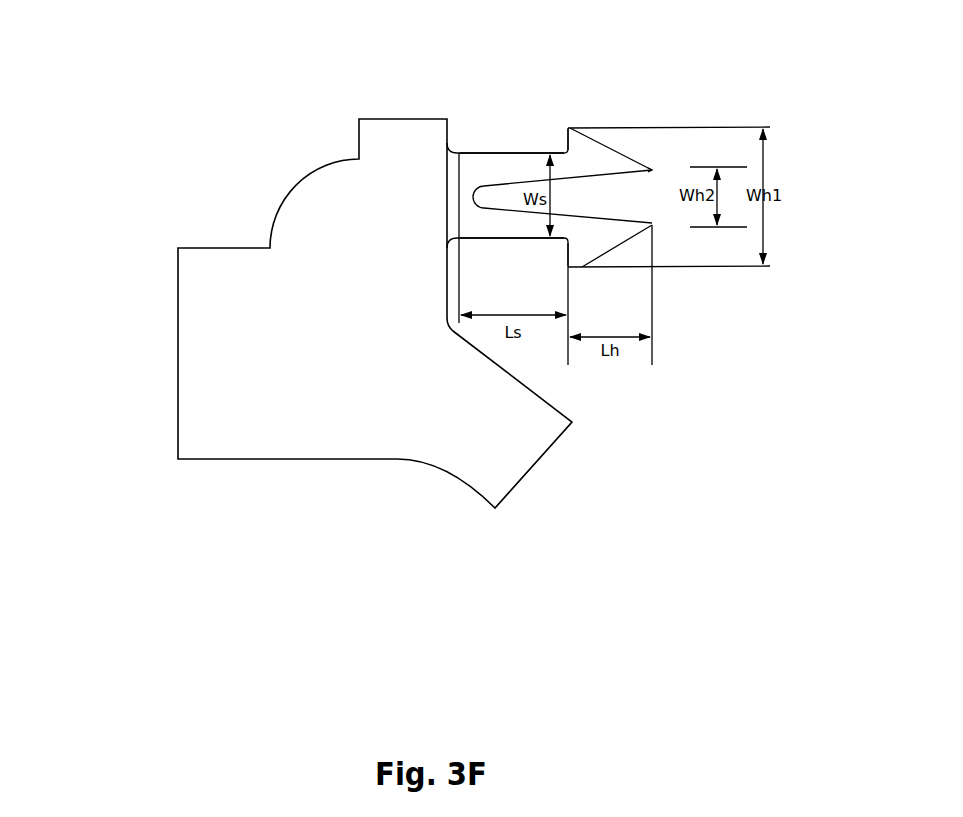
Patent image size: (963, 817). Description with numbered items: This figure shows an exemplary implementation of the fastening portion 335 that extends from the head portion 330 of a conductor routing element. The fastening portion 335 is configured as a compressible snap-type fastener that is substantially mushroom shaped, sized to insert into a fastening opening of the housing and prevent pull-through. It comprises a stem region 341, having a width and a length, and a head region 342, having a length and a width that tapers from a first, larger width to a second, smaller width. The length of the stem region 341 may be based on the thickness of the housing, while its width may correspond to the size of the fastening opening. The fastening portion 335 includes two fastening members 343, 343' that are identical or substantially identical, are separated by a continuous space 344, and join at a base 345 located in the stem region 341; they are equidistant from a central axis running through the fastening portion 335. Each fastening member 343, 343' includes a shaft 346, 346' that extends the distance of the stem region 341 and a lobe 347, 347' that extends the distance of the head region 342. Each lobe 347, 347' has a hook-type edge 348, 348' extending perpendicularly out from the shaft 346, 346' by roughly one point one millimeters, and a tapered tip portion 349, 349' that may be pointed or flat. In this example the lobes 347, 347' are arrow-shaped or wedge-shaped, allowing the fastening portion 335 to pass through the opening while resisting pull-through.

The head portion 330 is at (122, 67).
The fastening portion 335 is at (793, 120).
The stem region 341 is at (458, 92).
The head region 342 is at (565, 92).
The fastening member 343 is at (512, 272).
The fastening member 343' is at (512, 121).
The continuous space 344 is at (562, 196).
The base 345 is at (457, 198).
The shaft 346 is at (496, 222).
The shaft 346' is at (498, 170).
The lobe 347 is at (616, 244).
The lobe 347' is at (611, 150).
The hook-type edge 348 is at (548, 274).
The hook-type edge 348' is at (572, 125).
The tapered tip portion 349 is at (672, 295).
The tapered tip portion 349' is at (655, 152).